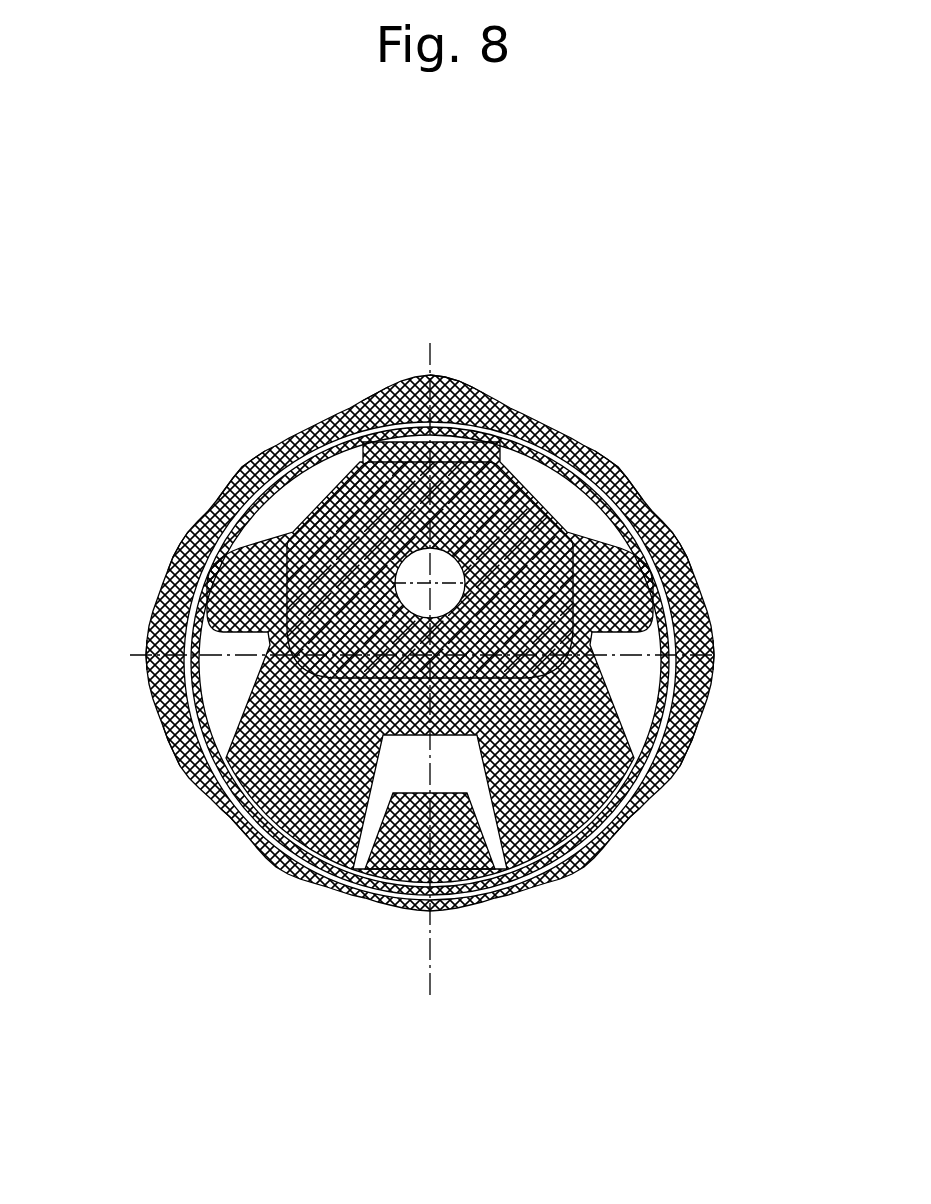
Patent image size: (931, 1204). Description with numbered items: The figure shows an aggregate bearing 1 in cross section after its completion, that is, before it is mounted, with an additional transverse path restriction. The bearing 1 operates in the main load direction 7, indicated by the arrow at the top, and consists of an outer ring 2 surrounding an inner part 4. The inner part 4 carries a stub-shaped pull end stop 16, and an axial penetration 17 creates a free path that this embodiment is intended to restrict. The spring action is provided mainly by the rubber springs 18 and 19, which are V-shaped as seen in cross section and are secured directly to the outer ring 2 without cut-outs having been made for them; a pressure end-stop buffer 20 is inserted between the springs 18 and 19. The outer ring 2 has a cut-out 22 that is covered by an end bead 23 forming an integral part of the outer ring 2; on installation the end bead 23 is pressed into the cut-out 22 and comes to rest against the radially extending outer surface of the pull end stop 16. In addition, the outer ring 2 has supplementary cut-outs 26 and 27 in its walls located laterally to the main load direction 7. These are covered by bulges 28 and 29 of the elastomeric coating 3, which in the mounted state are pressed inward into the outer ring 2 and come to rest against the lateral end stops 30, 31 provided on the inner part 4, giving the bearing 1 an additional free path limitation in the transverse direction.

The aggregate bearing 1 is at (198, 357).
The outer ring 2 is at (463, 432).
The elastomeric coating 3 is at (220, 497).
The inner part 4 is at (325, 547).
The main load direction 7 is at (432, 317).
The pull end stop 16 is at (468, 392).
The axial penetration 17 is at (665, 545).
The spring 18 is at (237, 823).
The spring 19 is at (637, 807).
The pressure end-stop buffer 20 is at (405, 848).
The cut-out 22 is at (383, 398).
The end bead 23 is at (442, 402).
The supplementary cut-out 26 is at (160, 697).
The supplementary cut-out 27 is at (698, 697).
The bulge 28 is at (168, 592).
The bulge 29 is at (693, 600).
The lateral end stop 30 is at (152, 637).
The lateral end stop 31 is at (712, 638).